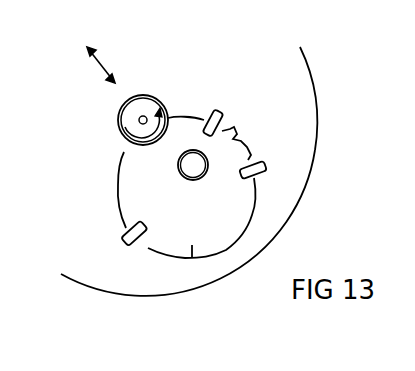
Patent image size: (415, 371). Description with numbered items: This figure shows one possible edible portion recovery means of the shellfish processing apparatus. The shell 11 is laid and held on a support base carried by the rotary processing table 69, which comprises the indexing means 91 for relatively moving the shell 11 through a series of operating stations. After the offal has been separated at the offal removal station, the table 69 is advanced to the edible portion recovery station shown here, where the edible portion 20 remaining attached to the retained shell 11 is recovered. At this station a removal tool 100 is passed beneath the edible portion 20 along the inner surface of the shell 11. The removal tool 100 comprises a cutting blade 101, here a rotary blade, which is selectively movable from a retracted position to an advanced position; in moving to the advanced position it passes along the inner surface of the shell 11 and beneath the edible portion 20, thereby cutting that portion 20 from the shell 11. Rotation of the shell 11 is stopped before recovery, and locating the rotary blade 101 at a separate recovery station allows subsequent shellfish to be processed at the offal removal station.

The shell 11 is at (192, 258).
The edible portion 20 is at (186, 165).
The rotary processing table 69 is at (296, 118).
The indexing means 91 is at (290, 224).
The removal tool 100 is at (164, 92).
The cutting blade 101 is at (150, 100).